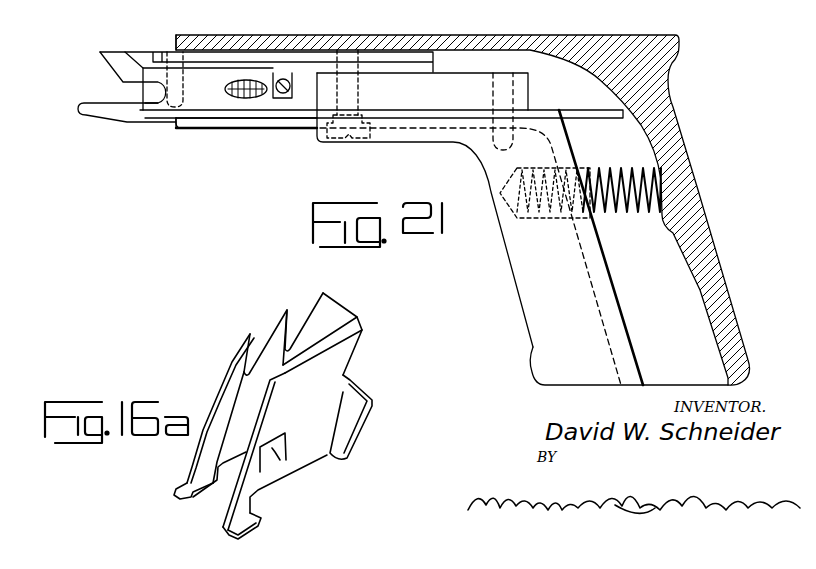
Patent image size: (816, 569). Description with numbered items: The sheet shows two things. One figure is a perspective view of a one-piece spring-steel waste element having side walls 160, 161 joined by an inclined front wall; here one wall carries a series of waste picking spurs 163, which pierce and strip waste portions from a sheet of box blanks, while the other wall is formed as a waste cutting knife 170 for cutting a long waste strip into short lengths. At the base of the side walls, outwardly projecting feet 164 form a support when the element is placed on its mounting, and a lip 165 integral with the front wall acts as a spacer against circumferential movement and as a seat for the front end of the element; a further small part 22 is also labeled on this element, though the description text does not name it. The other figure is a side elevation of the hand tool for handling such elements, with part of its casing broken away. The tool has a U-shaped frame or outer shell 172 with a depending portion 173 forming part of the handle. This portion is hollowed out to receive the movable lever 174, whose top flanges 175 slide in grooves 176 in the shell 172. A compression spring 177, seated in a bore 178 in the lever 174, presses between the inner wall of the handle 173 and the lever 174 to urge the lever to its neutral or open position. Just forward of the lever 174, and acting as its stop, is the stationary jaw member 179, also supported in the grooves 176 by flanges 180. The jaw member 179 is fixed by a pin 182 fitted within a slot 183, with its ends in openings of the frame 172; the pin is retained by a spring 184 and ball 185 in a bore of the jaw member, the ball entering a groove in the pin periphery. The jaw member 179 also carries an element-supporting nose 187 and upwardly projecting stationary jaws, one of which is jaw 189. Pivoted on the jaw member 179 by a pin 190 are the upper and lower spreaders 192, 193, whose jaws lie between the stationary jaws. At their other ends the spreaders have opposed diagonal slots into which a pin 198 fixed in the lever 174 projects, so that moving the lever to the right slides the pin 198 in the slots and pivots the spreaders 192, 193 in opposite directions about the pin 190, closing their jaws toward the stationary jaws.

In FIG. 21, the frame or outer shell 172 is at (555, 34).
In FIG. 21, the depending portion 173 is at (703, 226).
In FIG. 21, the movable lever 174 is at (520, 265).
In FIG. 21, the flanges 175 is at (420, 113).
In FIG. 21, the grooves 176 is at (587, 110).
In FIG. 21, the compression spring 177 is at (627, 217).
In FIG. 21, the bore 178 is at (593, 218).
In FIG. 21, the stationary jaw member 179 is at (210, 100).
In FIG. 21, the flanges 180 is at (270, 128).
In FIG. 21, the pin 182 is at (287, 100).
In FIG. 21, the slot 183 is at (293, 77).
In FIG. 21, the spring 184 is at (252, 100).
In FIG. 21, the ball 185 is at (272, 35).
In FIG. 21, the nose 187 is at (88, 114).
In FIG. 21, the jaw 189 is at (107, 61).
In FIG. 21, the pin 190 is at (167, 52).
In FIG. 21, the upper spreader 192 is at (213, 57).
In FIG. 21, the lower spreader 193 is at (177, 112).
In FIG. 21, the pin 198 is at (348, 43).
In FIG. 16A, the side wall 160 is at (230, 488).
In FIG. 16A, the side wall 161 is at (213, 392).
In FIG. 16A, the waste picking spurs 163 is at (283, 318).
In FIG. 16A, the feet 164 is at (176, 484).
In FIG. 16A, the lip 165 is at (358, 427).
In FIG. 16A, the waste cutting knife 170 is at (343, 322).
In FIG. 16A, the tab 22 is at (272, 450).